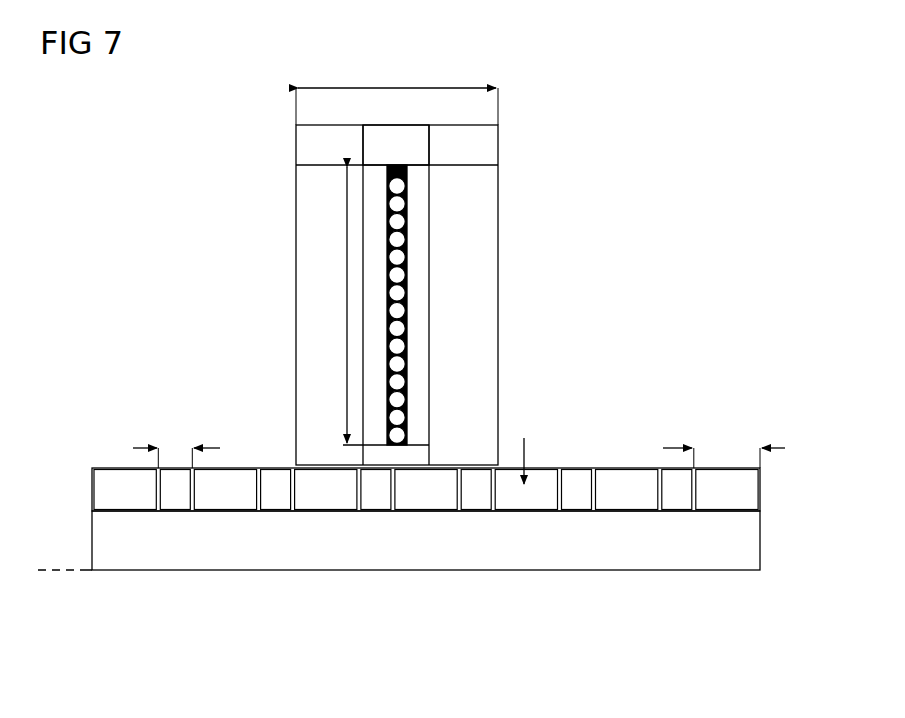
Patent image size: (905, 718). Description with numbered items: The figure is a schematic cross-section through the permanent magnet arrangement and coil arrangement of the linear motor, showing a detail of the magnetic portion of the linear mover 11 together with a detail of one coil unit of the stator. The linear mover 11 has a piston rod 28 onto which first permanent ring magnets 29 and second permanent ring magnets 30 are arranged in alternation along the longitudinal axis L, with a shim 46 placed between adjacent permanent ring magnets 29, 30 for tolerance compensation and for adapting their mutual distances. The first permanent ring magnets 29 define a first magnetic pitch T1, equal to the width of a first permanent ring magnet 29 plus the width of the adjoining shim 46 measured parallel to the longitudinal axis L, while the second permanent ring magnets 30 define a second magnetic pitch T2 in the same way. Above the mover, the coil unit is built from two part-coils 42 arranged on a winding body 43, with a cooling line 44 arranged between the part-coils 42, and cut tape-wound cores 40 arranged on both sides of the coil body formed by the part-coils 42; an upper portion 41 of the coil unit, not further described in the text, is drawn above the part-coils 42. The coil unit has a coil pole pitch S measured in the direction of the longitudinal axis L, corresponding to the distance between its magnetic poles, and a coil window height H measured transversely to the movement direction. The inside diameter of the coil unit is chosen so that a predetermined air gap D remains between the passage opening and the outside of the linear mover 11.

The linear mover 11 is at (212, 590).
The piston rod 28 is at (525, 553).
The first permanent ring magnet 29 is at (237, 463).
The second permanent ring magnet 30 is at (265, 467).
The cut tape-wound core 40 is at (312, 270).
The rotor top part 41 is at (395, 141).
The part-coil 42 is at (377, 337).
The winding body 43 is at (420, 455).
The cooling line 44 is at (398, 220).
The shim 46 is at (592, 468).
The coil pole pitch S is at (396, 86).
The coil window height H is at (345, 306).
The air gap D is at (528, 468).
The first magnetic pitch T1 is at (724, 446).
The second magnetic pitch T2 is at (178, 446).
The longitudinal axis L is at (65, 574).